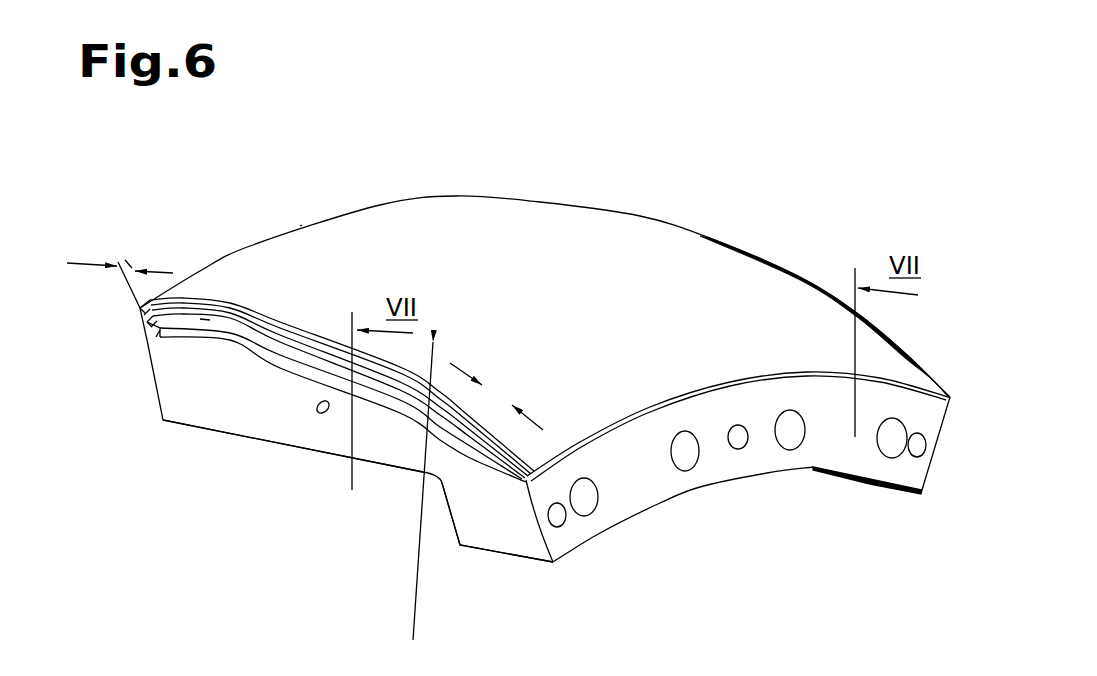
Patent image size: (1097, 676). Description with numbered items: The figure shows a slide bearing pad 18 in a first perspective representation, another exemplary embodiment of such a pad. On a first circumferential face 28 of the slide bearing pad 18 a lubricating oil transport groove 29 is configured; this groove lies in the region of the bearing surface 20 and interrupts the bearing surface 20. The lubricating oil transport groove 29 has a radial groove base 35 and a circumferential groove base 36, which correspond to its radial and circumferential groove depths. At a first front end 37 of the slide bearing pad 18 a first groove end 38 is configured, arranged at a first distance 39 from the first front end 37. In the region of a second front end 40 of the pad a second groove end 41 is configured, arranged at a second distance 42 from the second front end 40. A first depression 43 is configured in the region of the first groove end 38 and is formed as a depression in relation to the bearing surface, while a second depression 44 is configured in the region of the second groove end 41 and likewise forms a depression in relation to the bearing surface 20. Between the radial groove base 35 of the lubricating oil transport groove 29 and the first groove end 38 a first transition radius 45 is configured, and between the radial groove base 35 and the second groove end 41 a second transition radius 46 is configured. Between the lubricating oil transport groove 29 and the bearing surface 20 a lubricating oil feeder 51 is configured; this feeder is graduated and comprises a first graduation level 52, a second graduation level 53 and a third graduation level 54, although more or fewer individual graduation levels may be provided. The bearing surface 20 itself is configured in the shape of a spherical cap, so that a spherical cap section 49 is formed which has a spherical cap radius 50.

The slide bearing pad 18 is at (780, 142).
The bearing surface 20 is at (707, 313).
The first circumferential face 28 is at (177, 450).
The lubricating oil transport groove 29 is at (182, 298).
The radial groove base 35 is at (322, 378).
The circumferential groove base 36 is at (317, 333).
The first front end 37 is at (626, 538).
The first groove end 38 is at (512, 474).
The first distance 39 is at (493, 395).
The second front end 40 is at (140, 425).
The second groove end 41 is at (160, 338).
The second distance 42 is at (137, 310).
The first depression 43 is at (550, 455).
The second depression 44 is at (137, 312).
The first transition radius 45 is at (518, 486).
The second transition radius 46 is at (150, 333).
The spherical cap section 49 is at (483, 290).
The spherical cap radius 50 is at (413, 583).
The lubricating oil feeder 51 is at (280, 304).
The first graduation level 52 is at (228, 315).
The second graduation level 53 is at (240, 313).
The third graduation level 54 is at (255, 317).